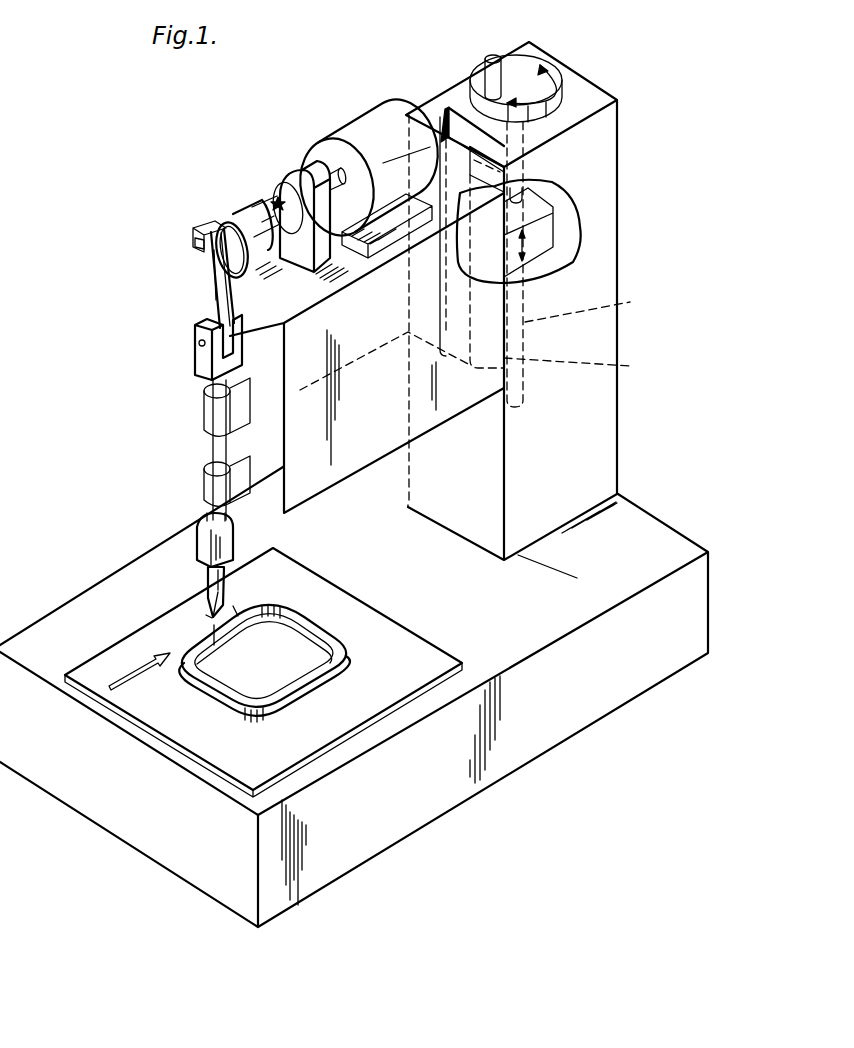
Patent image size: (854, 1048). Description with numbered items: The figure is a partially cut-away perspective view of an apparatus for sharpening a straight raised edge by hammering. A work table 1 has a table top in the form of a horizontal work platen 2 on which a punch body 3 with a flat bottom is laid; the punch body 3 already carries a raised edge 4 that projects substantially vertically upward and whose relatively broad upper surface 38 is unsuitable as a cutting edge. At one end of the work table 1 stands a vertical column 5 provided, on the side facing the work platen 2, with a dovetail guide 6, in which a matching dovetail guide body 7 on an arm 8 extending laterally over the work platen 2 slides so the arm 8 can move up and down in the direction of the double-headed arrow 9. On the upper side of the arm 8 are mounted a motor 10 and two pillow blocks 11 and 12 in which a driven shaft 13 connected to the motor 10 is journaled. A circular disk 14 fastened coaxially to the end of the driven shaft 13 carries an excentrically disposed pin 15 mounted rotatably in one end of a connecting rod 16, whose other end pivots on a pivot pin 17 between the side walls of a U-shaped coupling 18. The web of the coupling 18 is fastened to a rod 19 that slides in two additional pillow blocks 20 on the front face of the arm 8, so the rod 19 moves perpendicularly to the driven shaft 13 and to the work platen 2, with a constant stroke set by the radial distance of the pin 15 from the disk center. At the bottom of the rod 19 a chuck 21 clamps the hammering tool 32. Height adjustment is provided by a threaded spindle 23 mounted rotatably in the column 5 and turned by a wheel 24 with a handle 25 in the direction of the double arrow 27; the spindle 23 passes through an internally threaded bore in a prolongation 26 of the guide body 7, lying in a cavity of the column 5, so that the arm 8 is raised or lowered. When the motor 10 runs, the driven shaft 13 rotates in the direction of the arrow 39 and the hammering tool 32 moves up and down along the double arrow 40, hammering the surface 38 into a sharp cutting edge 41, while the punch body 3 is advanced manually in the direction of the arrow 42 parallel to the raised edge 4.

The work table 1 is at (620, 683).
The work platen 2 is at (513, 644).
The punch body 3 is at (345, 720).
The raised edge 4 is at (220, 702).
The column 5 is at (603, 461).
The dovetail guide 6 is at (463, 130).
The dovetail guide body 7 is at (577, 264).
The arm 8 is at (345, 468).
The double-headed arrow 9 is at (525, 247).
The motor 10 is at (360, 118).
The pillow block 11 is at (302, 183).
The pillow block 12 is at (245, 212).
The driven shaft 13 is at (292, 198).
The circular disk 14 is at (214, 220).
The excentrically disposed pin 15 is at (194, 246).
The connecting rod 16 is at (211, 298).
The pivot pin 17 is at (199, 345).
The U-shaped coupling 18 is at (207, 367).
The rod 19 is at (213, 402).
The pillow blocks 20 is at (210, 487).
The chuck 21 is at (199, 546).
The threaded spindle 23 is at (592, 304).
The wheel 24 is at (557, 73).
The handle 25 is at (507, 78).
The prolongation 26 is at (540, 208).
The double arrow 27 is at (546, 92).
The hammering tool 32 is at (212, 580).
The upper surface of the raised edge 38 is at (218, 702).
The arrow 39 is at (278, 200).
The double arrow 40 is at (208, 616).
The sharp cutting edge 41 is at (238, 608).
The arrow 42 is at (123, 678).